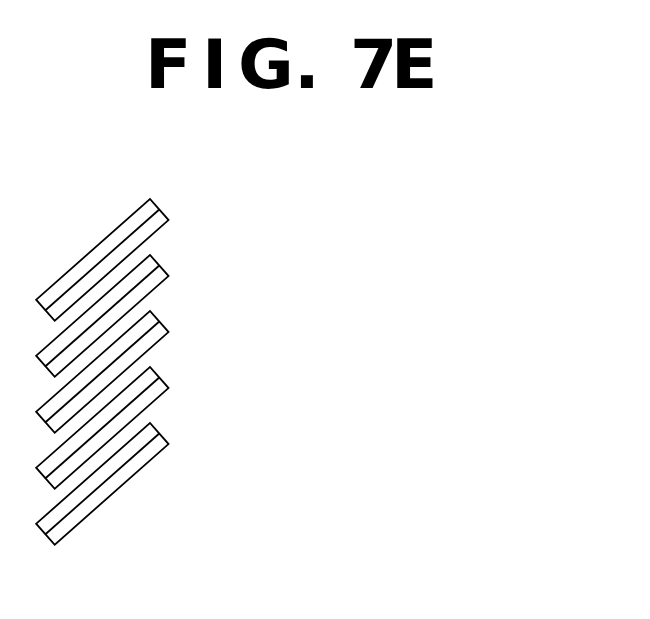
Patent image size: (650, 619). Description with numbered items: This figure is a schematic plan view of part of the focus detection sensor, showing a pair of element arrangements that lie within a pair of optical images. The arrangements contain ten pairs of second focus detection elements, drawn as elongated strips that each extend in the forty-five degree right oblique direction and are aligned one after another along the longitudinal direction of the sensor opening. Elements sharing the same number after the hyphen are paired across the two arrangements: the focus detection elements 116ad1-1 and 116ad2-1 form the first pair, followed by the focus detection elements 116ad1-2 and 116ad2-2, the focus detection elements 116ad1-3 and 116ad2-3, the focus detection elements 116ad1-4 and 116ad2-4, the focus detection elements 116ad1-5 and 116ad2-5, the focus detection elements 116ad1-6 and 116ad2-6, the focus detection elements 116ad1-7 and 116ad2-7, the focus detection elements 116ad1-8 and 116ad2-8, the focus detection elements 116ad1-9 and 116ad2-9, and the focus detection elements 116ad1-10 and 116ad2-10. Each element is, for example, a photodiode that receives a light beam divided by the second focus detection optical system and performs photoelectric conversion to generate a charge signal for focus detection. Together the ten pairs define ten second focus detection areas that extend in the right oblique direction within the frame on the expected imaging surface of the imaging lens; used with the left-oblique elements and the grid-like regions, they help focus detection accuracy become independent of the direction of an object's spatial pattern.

The focus detection element 116ad1-1 is at (295, 229).
The focus detection element 116ad2-1 is at (295, 229).
The focus detection element 116ad1-2 is at (295, 229).
The focus detection element 116ad2-2 is at (146, 203).
The focus detection element 116ad1-3 is at (295, 302).
The focus detection element 116ad2-3 is at (295, 302).
The focus detection element 116ad1-4 is at (295, 302).
The focus detection element 116ad2-4 is at (148, 253).
The focus detection element 116ad1-5 is at (295, 367).
The focus detection element 116ad2-5 is at (295, 367).
The focus detection element 116ad1-6 is at (295, 367).
The focus detection element 116ad2-6 is at (153, 312).
The focus detection element 116ad1-7 is at (295, 428).
The focus detection element 116ad2-7 is at (295, 428).
The focus detection element 116ad1-8 is at (295, 428).
The focus detection element 116ad2-8 is at (153, 368).
The focus detection element 116ad1-9 is at (318, 503).
The focus detection element 116ad2-9 is at (318, 503).
The focus detection element 116ad1-10 is at (318, 503).
The focus detection element 116ad2-10 is at (148, 440).